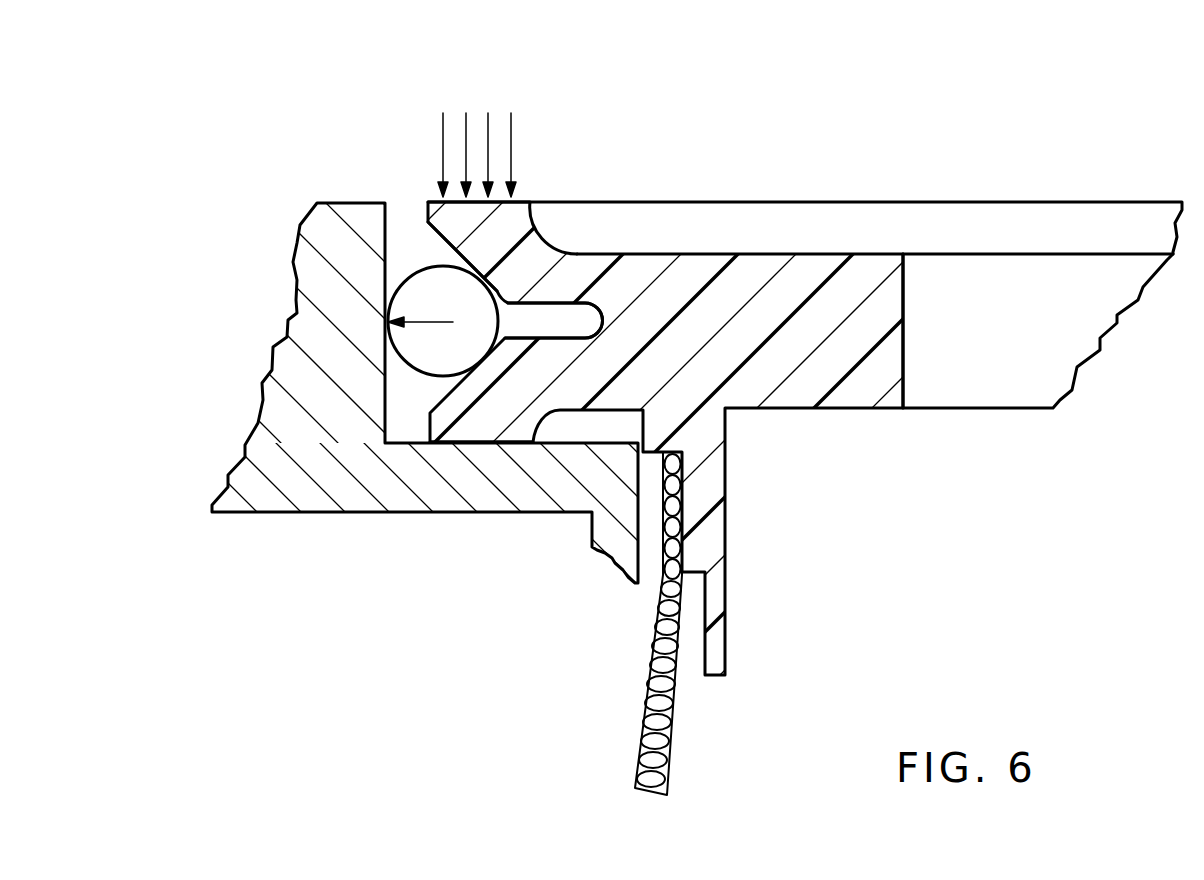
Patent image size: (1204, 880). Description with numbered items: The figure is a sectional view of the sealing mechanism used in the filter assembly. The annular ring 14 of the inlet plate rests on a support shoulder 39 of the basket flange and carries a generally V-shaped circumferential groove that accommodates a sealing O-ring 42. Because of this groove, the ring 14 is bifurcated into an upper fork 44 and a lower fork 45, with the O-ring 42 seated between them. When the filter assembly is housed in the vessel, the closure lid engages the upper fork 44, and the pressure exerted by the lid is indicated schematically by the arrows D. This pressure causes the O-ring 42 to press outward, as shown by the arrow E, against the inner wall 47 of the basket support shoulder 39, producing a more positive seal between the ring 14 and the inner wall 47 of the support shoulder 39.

The annular ring 14 is at (420, 237).
The support shoulder 39 is at (321, 513).
The sealing O-ring 42 is at (423, 357).
The upper fork 44 is at (430, 229).
The lower fork 45 is at (478, 422).
The inner wall 47 is at (410, 444).
The arrows D is at (517, 106).
The arrow E is at (426, 321).